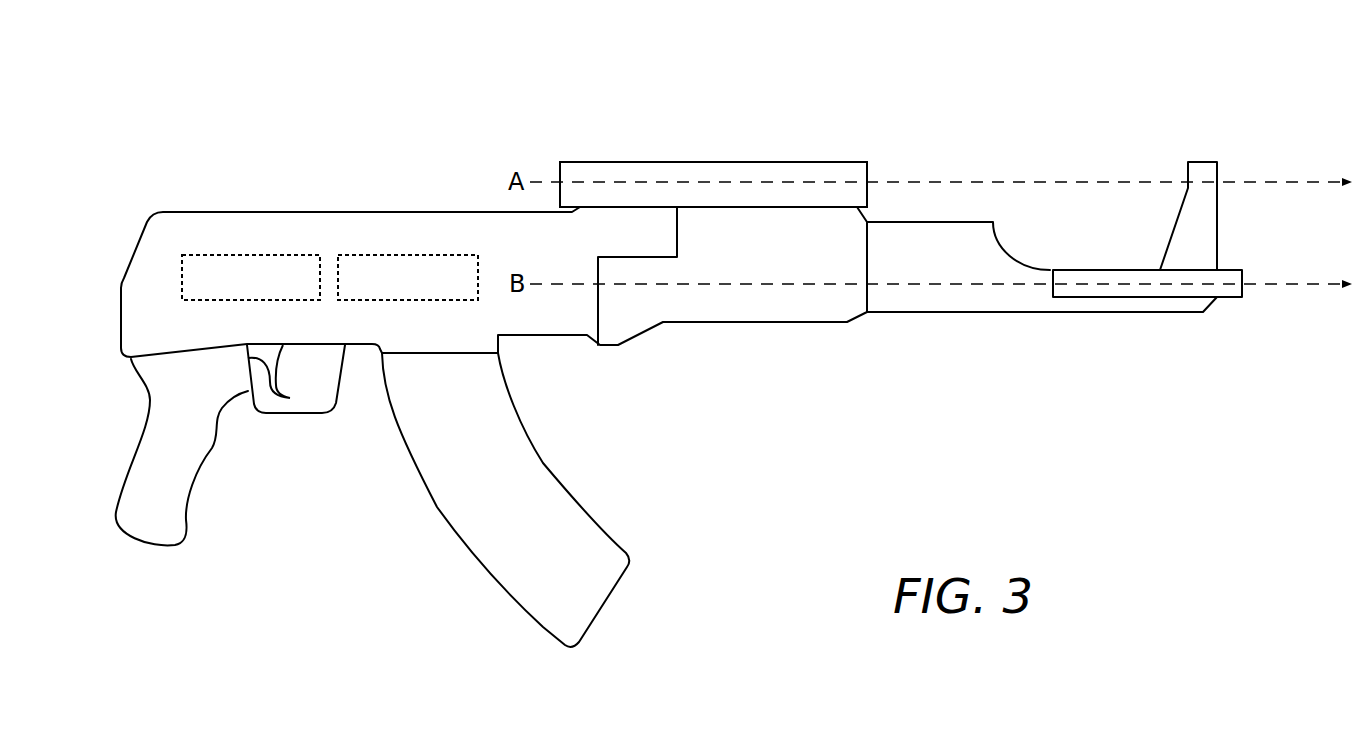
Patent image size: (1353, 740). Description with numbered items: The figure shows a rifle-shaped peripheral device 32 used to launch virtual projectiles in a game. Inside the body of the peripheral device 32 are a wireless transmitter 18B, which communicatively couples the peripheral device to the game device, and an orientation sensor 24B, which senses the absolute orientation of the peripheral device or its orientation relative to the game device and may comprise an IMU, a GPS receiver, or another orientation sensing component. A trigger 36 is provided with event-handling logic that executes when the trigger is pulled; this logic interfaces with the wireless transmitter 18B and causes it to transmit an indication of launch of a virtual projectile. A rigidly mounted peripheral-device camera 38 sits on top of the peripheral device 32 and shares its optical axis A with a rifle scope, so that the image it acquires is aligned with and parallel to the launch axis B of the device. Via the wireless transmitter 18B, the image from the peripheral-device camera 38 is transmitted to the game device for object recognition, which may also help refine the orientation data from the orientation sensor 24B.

The peripheral device 32 is at (1309, 116).
The peripheral-device camera 38 is at (707, 162).
The trigger 36 is at (277, 372).
The orientation sensor 24B is at (251, 277).
The wireless transmitter 18B is at (408, 277).